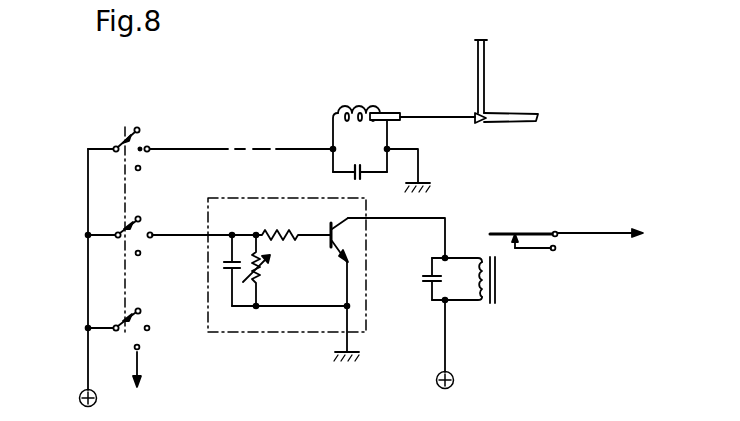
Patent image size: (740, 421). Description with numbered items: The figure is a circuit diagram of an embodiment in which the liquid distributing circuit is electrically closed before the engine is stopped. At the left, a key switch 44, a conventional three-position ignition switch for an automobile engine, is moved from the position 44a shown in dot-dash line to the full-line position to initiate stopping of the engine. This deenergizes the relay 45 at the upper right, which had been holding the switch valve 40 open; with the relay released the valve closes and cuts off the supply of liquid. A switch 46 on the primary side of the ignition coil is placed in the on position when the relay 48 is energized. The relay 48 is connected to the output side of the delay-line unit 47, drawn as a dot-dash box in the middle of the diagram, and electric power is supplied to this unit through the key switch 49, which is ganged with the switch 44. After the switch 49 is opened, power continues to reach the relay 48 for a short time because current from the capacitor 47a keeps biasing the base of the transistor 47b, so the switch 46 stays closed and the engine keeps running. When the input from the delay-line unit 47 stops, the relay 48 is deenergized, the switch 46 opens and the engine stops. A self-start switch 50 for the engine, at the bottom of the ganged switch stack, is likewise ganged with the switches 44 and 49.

The switch valve 40 is at (476, 114).
The key switch 44 is at (125, 145).
The key switch position 44a is at (137, 146).
The relay 45 is at (340, 105).
The switch 46 is at (501, 247).
The delay-line unit 47 is at (288, 332).
The capacitor 47a is at (222, 265).
The transistor 47b is at (330, 228).
The relay 48 is at (478, 302).
The key switch 49 is at (130, 220).
The self-start switch 50 is at (128, 316).